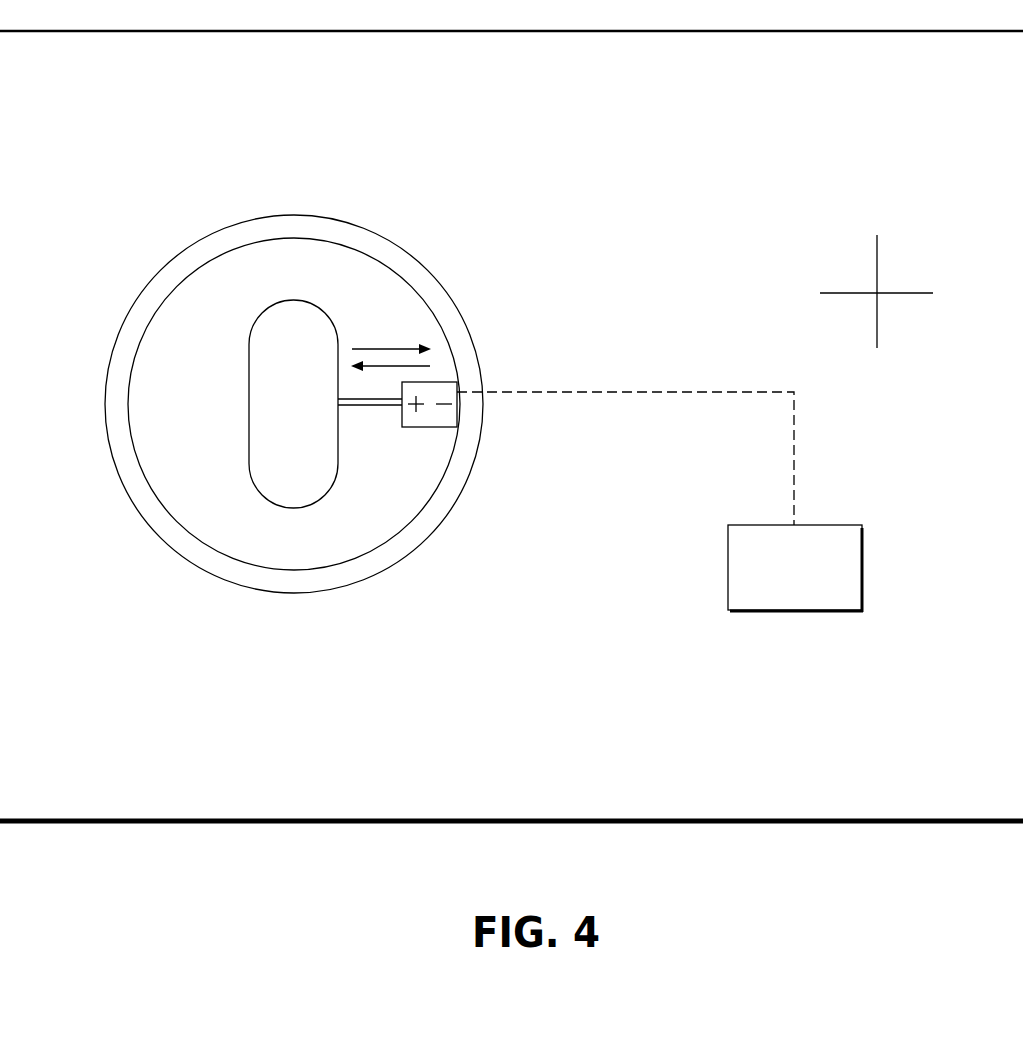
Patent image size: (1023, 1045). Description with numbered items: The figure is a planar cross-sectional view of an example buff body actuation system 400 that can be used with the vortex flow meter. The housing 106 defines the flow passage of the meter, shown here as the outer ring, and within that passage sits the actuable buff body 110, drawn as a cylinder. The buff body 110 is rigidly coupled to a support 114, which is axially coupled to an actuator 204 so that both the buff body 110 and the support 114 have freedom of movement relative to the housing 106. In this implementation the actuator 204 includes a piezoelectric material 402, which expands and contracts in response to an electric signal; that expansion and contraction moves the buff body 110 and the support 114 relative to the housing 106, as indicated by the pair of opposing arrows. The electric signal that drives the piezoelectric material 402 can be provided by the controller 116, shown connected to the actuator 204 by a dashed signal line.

The buff body actuation system 400 is at (434, 180).
The housing 106 is at (296, 228).
The buff body 110 is at (258, 345).
The support 114 is at (358, 406).
The piezoelectric material 402 is at (433, 420).
The actuator 204 is at (506, 419).
The controller 116 is at (776, 583).